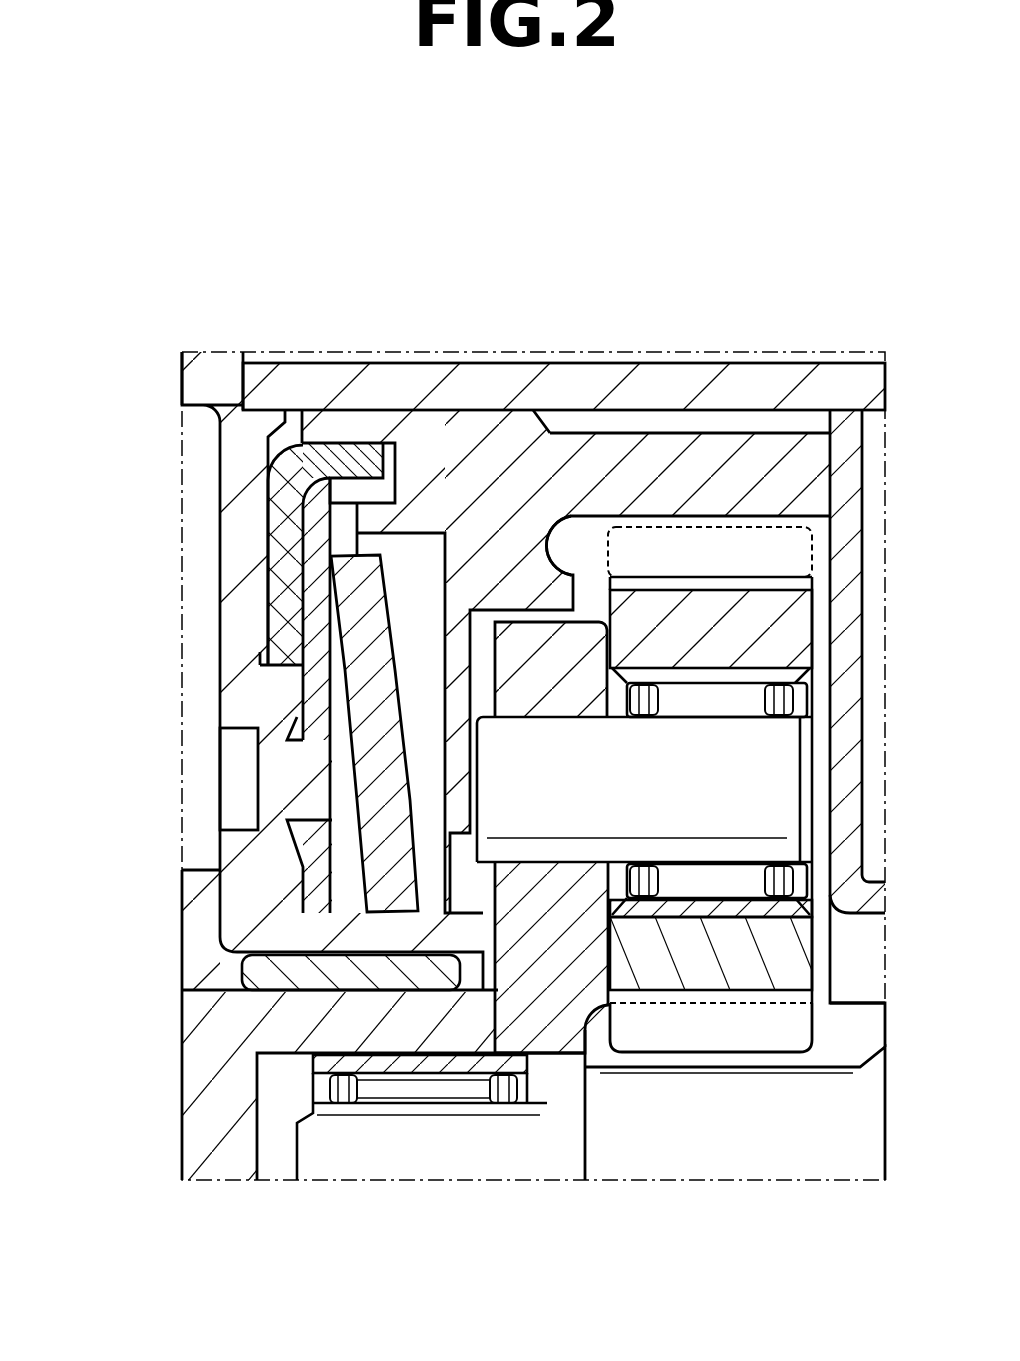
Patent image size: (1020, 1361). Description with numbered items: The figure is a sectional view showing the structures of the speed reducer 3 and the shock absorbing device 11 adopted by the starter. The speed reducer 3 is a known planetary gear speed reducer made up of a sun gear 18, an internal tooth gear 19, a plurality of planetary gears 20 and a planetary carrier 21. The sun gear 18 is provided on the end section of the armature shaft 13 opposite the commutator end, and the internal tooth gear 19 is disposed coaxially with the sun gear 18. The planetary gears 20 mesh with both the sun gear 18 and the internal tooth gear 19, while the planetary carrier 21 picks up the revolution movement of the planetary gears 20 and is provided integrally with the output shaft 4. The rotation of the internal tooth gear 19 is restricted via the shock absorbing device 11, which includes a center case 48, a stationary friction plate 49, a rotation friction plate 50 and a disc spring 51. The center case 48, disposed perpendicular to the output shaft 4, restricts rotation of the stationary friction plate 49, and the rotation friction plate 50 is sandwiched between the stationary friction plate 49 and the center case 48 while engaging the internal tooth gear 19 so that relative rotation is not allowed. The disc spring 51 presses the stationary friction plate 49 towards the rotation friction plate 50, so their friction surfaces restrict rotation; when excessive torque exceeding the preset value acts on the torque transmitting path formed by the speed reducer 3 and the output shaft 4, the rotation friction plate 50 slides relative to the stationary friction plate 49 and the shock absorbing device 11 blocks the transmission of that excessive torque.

The speed reducer 3 is at (742, 432).
The output shaft 4 is at (288, 1033).
The shock absorbing device 11 is at (377, 920).
The armature shaft 13 is at (645, 1145).
The sun gear 18 is at (848, 1040).
The internal tooth gear 19 is at (587, 540).
The planetary gears 20 is at (730, 1030).
The planetary carrier 21 is at (535, 905).
The center case 48 is at (237, 470).
The stationary friction plate 49 is at (320, 650).
The rotation friction plate 50 is at (283, 566).
The disc spring 51 is at (370, 740).